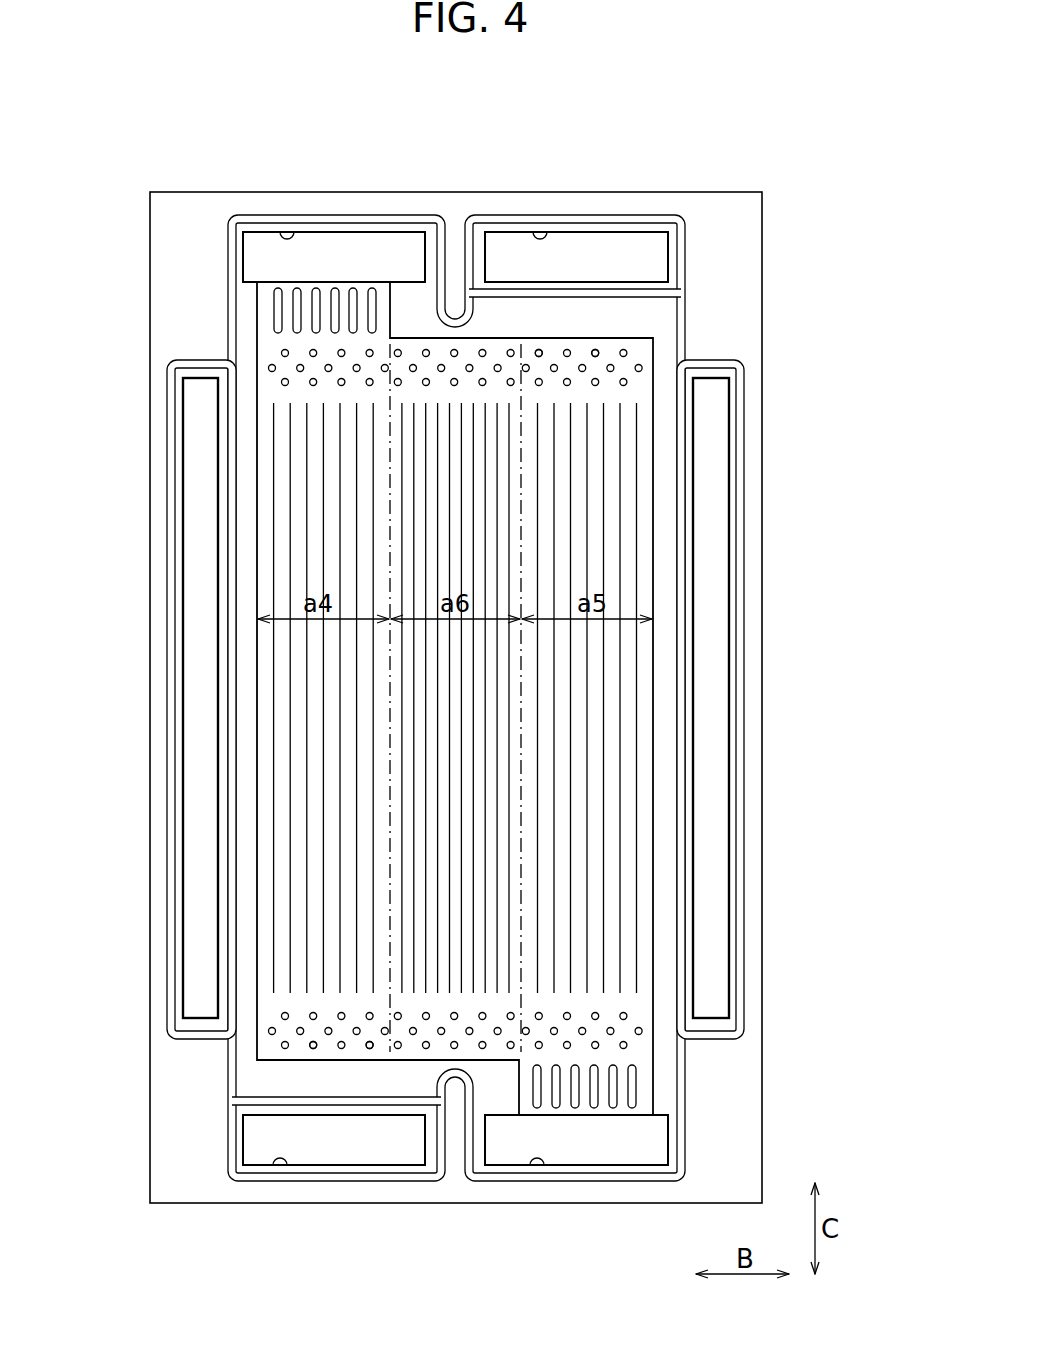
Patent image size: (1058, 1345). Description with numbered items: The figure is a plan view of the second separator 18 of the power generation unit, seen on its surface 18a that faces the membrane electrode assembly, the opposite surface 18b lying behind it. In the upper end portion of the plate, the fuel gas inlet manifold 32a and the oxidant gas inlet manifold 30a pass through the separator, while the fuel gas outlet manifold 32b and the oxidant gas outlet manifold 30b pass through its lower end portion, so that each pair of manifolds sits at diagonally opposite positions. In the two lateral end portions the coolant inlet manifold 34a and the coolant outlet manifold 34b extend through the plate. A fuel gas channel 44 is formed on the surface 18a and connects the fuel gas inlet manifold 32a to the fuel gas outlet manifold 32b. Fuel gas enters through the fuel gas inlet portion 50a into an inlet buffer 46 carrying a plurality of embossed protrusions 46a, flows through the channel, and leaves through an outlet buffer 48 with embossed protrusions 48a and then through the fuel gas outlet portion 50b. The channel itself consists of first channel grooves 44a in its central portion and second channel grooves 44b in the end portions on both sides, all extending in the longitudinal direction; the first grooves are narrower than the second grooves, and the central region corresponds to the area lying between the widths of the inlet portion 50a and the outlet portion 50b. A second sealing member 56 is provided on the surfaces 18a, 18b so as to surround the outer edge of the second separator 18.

The second separator 18 is at (565, 83).
The surface of the second separator 18a is at (733, 1135).
The surface of the second separator 18b is at (740, 1163).
The oxidant gas inlet manifold 30a is at (546, 236).
The oxidant gas outlet manifold 30b is at (282, 1167).
The fuel gas inlet manifold 32a is at (291, 236).
The fuel gas outlet manifold 32b is at (536, 1167).
The coolant inlet manifold 34a is at (710, 440).
The coolant outlet manifold 34b is at (202, 768).
The fuel gas channel 44 is at (635, 740).
The first channel grooves 44a is at (481, 805).
The second channel grooves 44b is at (622, 792).
The inlet buffer 46 is at (612, 352).
The embossed protrusions 46a is at (540, 350).
The outlet buffer 48 is at (300, 1046).
The embossed protrusions 48a is at (314, 1048).
The fuel gas inlet portion 50a is at (285, 314).
The fuel gas outlet portion 50b is at (625, 1082).
The second sealing member 56 is at (587, 191).